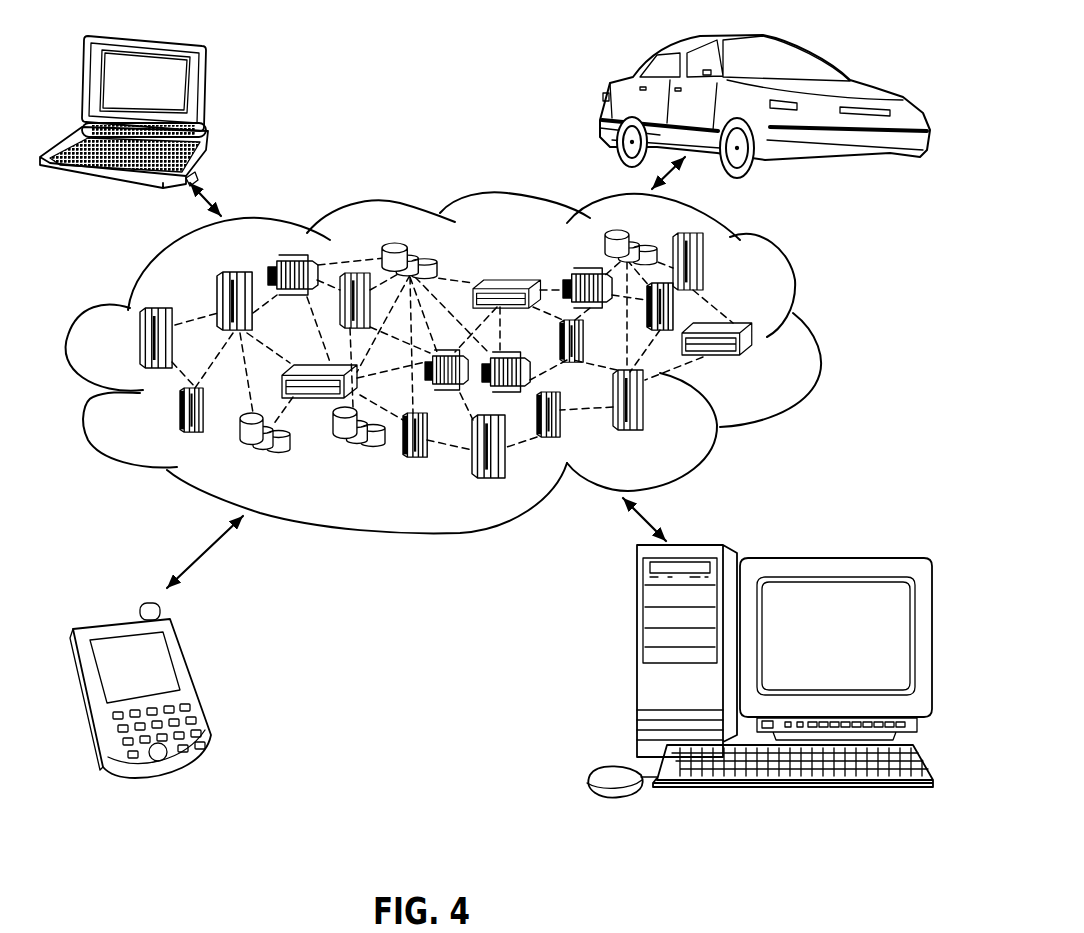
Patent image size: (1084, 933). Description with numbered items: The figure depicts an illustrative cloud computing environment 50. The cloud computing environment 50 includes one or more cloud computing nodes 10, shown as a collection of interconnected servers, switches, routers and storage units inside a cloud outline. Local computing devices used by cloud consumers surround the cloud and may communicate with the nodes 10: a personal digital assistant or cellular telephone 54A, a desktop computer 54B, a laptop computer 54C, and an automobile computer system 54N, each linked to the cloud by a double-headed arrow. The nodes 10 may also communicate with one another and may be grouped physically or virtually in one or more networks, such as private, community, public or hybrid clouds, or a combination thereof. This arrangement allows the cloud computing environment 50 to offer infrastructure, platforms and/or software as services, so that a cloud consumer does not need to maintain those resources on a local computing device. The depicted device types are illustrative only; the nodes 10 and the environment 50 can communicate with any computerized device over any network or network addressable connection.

The cloud computing node 10 is at (780, 362).
The cloud computing environment 50 is at (800, 298).
The personal digital assistant or cellular telephone 54A is at (190, 677).
The desktop computer 54B is at (637, 660).
The laptop computer 54C is at (203, 88).
The automobile computer system 54N is at (610, 95).